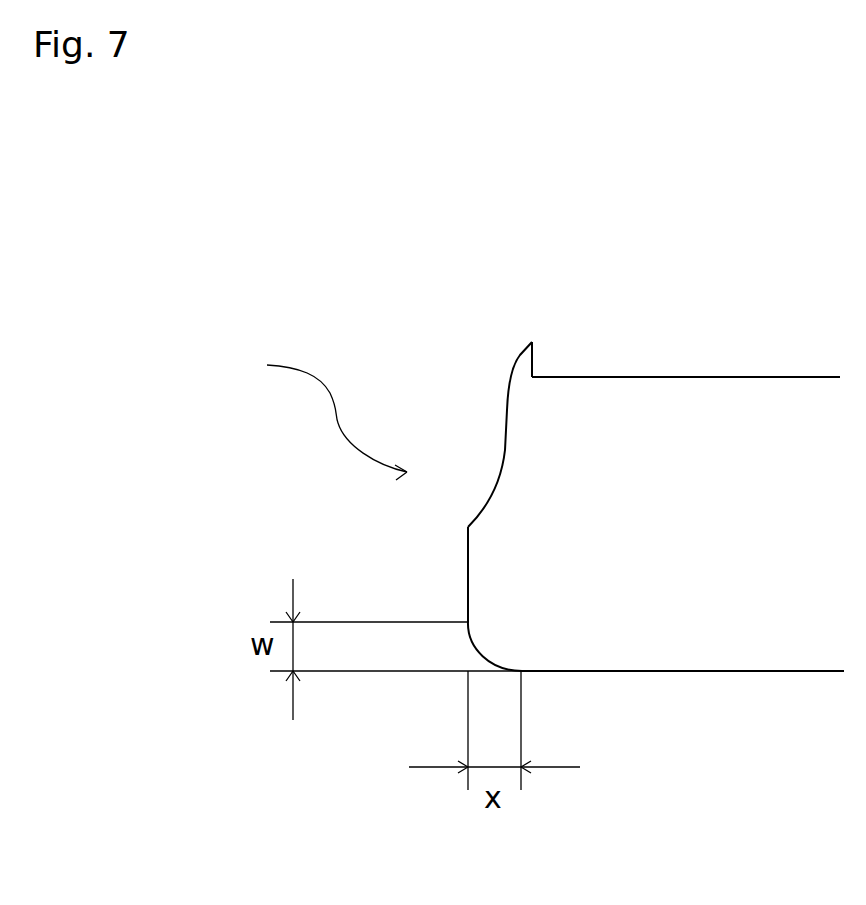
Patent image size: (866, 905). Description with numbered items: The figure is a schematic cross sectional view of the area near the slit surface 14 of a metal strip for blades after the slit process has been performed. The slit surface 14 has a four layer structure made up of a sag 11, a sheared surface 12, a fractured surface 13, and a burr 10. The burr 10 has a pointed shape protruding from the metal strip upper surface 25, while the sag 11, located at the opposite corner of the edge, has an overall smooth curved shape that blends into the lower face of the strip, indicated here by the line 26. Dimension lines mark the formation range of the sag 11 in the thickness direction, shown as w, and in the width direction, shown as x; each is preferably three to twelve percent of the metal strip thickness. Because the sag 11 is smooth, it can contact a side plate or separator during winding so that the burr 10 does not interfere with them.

The burr 10 is at (516, 355).
The sag 11 is at (485, 658).
The sheared surface 12 is at (468, 575).
The fractured surface 13 is at (503, 433).
The slit surface 14 is at (310, 412).
The metal strip upper surface 25 is at (703, 377).
The lower surface 26 is at (693, 671).